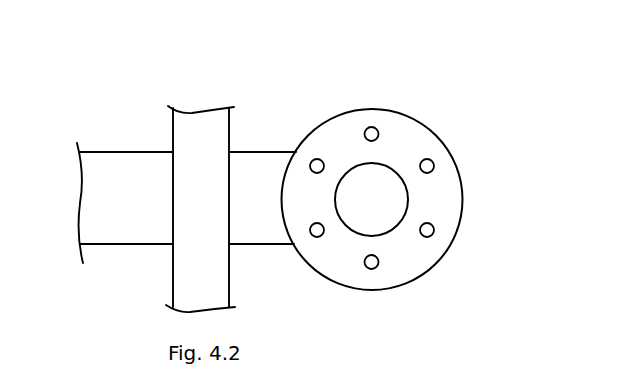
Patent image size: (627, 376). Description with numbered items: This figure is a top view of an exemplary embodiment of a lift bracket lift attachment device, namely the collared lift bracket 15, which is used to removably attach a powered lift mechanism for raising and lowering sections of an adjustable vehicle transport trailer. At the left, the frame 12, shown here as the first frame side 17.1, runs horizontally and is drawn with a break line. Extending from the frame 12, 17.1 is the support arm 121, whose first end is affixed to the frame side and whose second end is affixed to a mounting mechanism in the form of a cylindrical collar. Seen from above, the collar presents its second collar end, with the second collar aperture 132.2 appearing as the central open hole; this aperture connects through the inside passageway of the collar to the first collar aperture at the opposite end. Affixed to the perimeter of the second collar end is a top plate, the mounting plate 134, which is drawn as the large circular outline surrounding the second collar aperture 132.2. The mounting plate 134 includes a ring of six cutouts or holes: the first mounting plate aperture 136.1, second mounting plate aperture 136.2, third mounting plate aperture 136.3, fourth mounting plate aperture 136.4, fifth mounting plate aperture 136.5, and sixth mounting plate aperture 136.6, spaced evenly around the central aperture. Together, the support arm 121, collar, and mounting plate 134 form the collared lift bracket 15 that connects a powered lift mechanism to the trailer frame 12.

The frame 12 is at (177, 237).
The first frame side 17.1 is at (183, 272).
The collared lift bracket 15 is at (517, 210).
The support arm 121 is at (263, 180).
The second collar aperture 132.2 is at (376, 183).
The mounting plate 134 is at (423, 137).
The first mounting plate aperture 136.1 is at (431, 161).
The second mounting plate aperture 136.2 is at (433, 229).
The third mounting plate aperture 136.3 is at (379, 262).
The fourth mounting plate aperture 136.4 is at (310, 229).
The fifth mounting plate aperture 136.5 is at (318, 165).
The sixth mounting plate aperture 136.6 is at (371, 127).